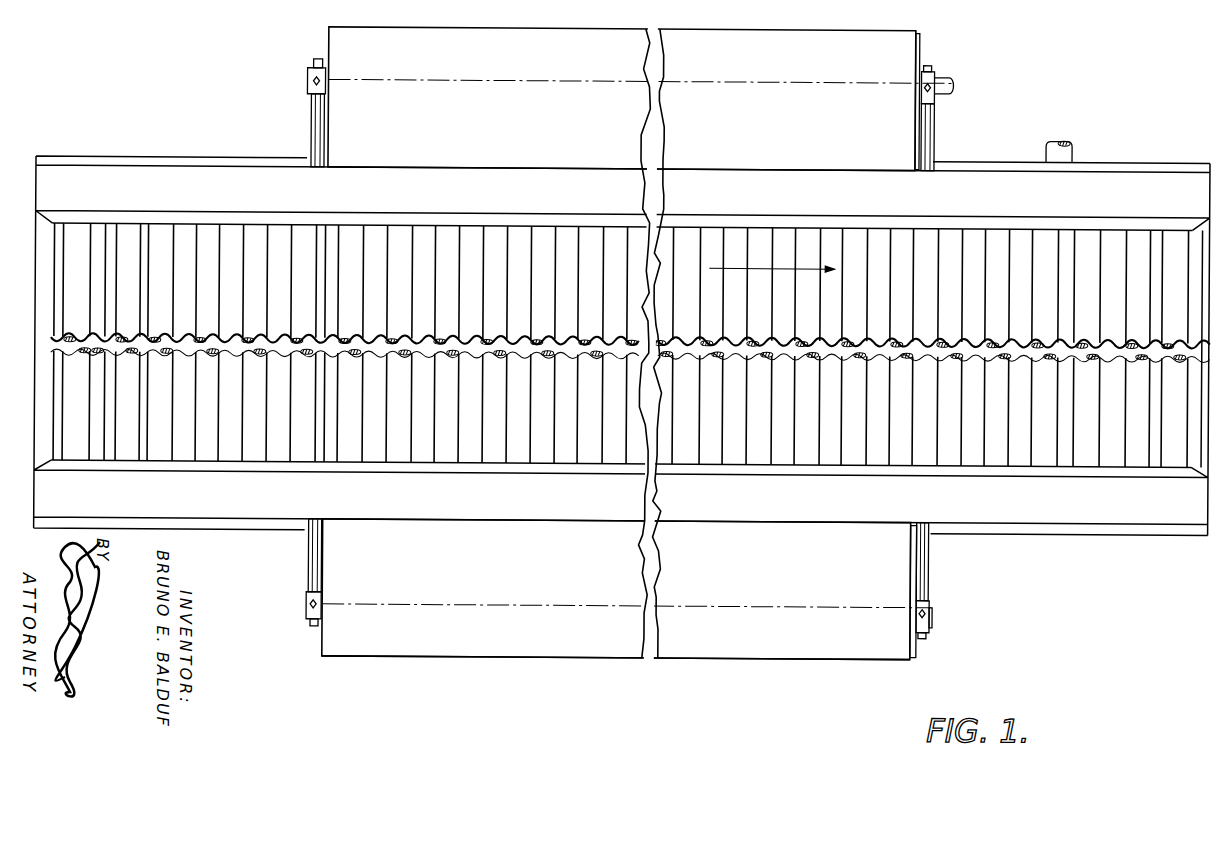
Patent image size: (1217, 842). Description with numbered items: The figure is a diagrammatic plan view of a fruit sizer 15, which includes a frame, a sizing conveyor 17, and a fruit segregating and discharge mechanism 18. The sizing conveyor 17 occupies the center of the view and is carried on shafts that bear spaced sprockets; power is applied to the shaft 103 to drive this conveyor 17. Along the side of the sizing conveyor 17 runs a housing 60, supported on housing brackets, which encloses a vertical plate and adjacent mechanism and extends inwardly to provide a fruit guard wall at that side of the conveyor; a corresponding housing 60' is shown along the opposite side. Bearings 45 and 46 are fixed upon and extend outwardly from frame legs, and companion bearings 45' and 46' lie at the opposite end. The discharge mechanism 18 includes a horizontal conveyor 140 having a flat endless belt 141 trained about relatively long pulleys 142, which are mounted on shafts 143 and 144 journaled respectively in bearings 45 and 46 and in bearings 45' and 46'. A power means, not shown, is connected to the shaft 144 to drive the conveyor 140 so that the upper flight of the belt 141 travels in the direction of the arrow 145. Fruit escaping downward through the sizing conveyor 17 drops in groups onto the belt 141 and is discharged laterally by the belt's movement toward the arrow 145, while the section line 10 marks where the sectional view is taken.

The section line 10 is at (303, 282).
The sizer 15 is at (1112, 78).
The sizing conveyor 17 is at (946, 233).
The fruit segregating and discharge mechanism 18 is at (797, 644).
The bearing 45 is at (288, 571).
The bearing 45' is at (292, 112).
The bearing 46 is at (942, 575).
The bearing 46' is at (952, 118).
The housing 60 is at (620, 510).
The side rail 60' is at (623, 184).
The shaft 103 is at (1072, 142).
The horizontal conveyor 140 is at (715, 651).
The flat endless belt 141 is at (813, 136).
The pulleys 142 is at (920, 46).
The shaft 143 is at (934, 608).
The shaft 144 is at (943, 72).
The arrow 145 is at (621, 91).